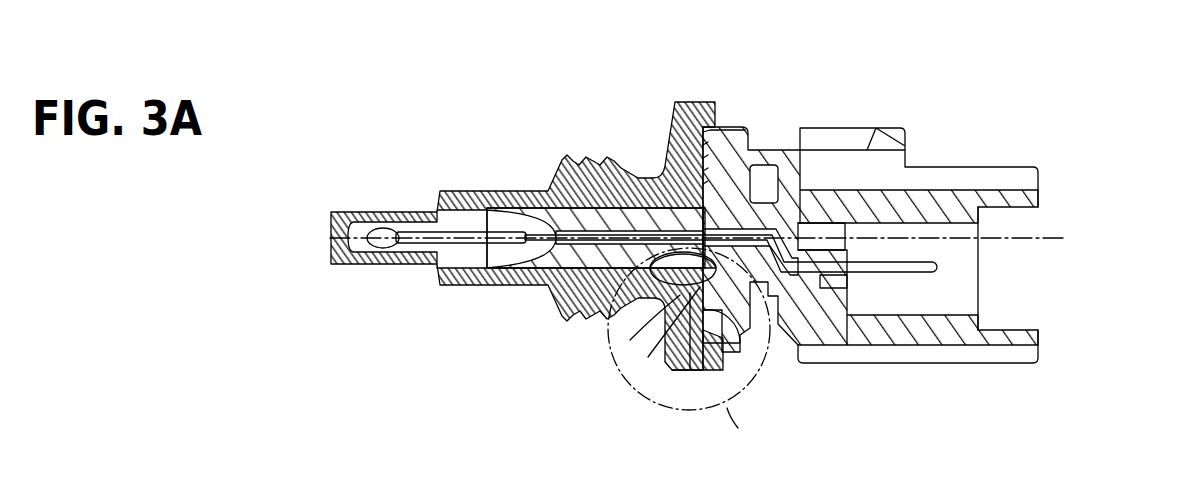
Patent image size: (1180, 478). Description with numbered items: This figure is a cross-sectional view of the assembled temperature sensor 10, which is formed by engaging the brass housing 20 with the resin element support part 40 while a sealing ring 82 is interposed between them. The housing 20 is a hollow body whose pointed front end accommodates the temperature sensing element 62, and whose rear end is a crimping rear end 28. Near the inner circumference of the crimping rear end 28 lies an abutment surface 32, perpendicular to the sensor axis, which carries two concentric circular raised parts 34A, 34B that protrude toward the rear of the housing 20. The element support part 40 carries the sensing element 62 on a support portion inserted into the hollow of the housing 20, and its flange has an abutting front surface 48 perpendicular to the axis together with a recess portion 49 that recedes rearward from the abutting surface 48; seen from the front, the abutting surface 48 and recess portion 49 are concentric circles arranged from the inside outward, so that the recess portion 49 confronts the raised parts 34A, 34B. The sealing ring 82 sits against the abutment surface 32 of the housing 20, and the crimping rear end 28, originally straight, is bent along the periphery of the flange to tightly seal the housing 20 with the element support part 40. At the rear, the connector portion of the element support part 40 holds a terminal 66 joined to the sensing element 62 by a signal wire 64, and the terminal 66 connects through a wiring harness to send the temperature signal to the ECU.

The temperature sensor 10 is at (432, 104).
The housing 20 is at (428, 189).
The crimping rear end 28 is at (746, 128).
The abutment surface 32 is at (625, 318).
The circular raised part 34A is at (724, 352).
The circular raised part 34B is at (726, 372).
The element support part 40 is at (921, 160).
The abutting front surface 48 is at (630, 340).
The recess portion 49 is at (648, 357).
The temperature sensing element 62 is at (384, 249).
The signal wire 64 is at (520, 272).
The terminal 66 is at (887, 275).
The sealing ring 82 is at (683, 372).